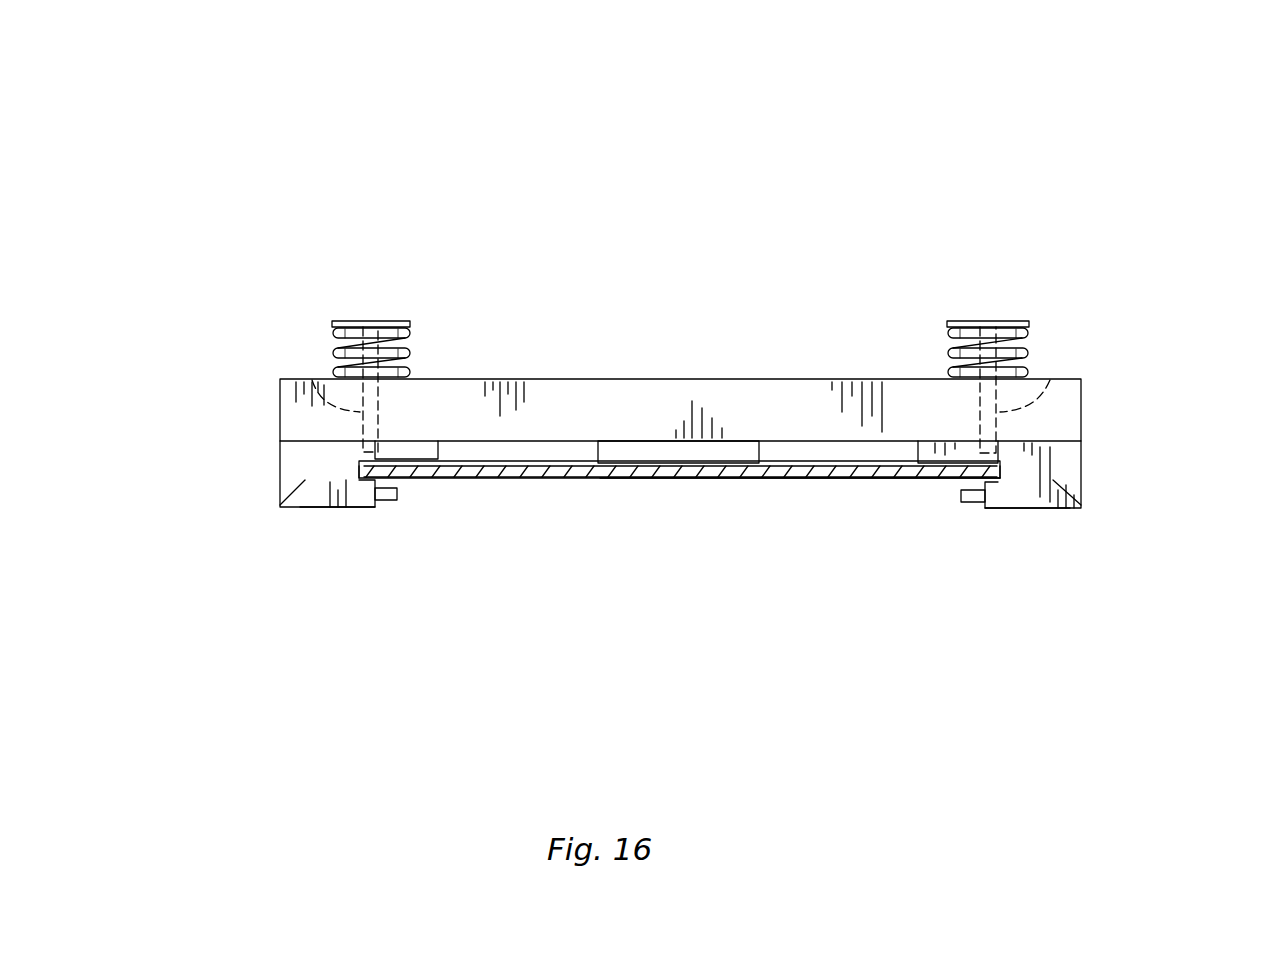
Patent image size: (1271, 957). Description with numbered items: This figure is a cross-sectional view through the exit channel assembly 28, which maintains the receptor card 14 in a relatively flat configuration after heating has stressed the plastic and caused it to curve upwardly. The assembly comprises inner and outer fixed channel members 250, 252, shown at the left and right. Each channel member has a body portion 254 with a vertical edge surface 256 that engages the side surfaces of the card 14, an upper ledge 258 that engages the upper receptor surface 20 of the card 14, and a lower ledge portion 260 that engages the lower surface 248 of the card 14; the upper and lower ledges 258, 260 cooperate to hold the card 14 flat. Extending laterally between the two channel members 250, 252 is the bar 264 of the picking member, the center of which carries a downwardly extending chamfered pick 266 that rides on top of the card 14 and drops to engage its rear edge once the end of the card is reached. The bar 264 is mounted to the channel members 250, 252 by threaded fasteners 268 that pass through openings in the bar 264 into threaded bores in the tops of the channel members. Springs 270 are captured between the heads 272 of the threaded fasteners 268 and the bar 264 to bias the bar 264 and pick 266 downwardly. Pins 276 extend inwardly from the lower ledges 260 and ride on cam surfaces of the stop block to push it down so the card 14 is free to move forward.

The receptor card 14 is at (447, 475).
The receptor surface 20 is at (520, 463).
The exit channel assembly 28 is at (682, 178).
The lower surface 248 is at (800, 478).
The inner fixed channel member 250 is at (1081, 475).
The outer fixed channel member 252 is at (280, 475).
The body portion 254 is at (300, 482).
The vertical edge surface 256 is at (350, 465).
The upper ledge 258 is at (425, 448).
The lower ledge portion 260 is at (350, 503).
The bar 264 is at (590, 400).
The chamfered pick 266 is at (705, 450).
The threaded fastener 268 is at (312, 380).
The spring 270 is at (412, 350).
The head 272 is at (347, 320).
The pin 276 is at (398, 500).